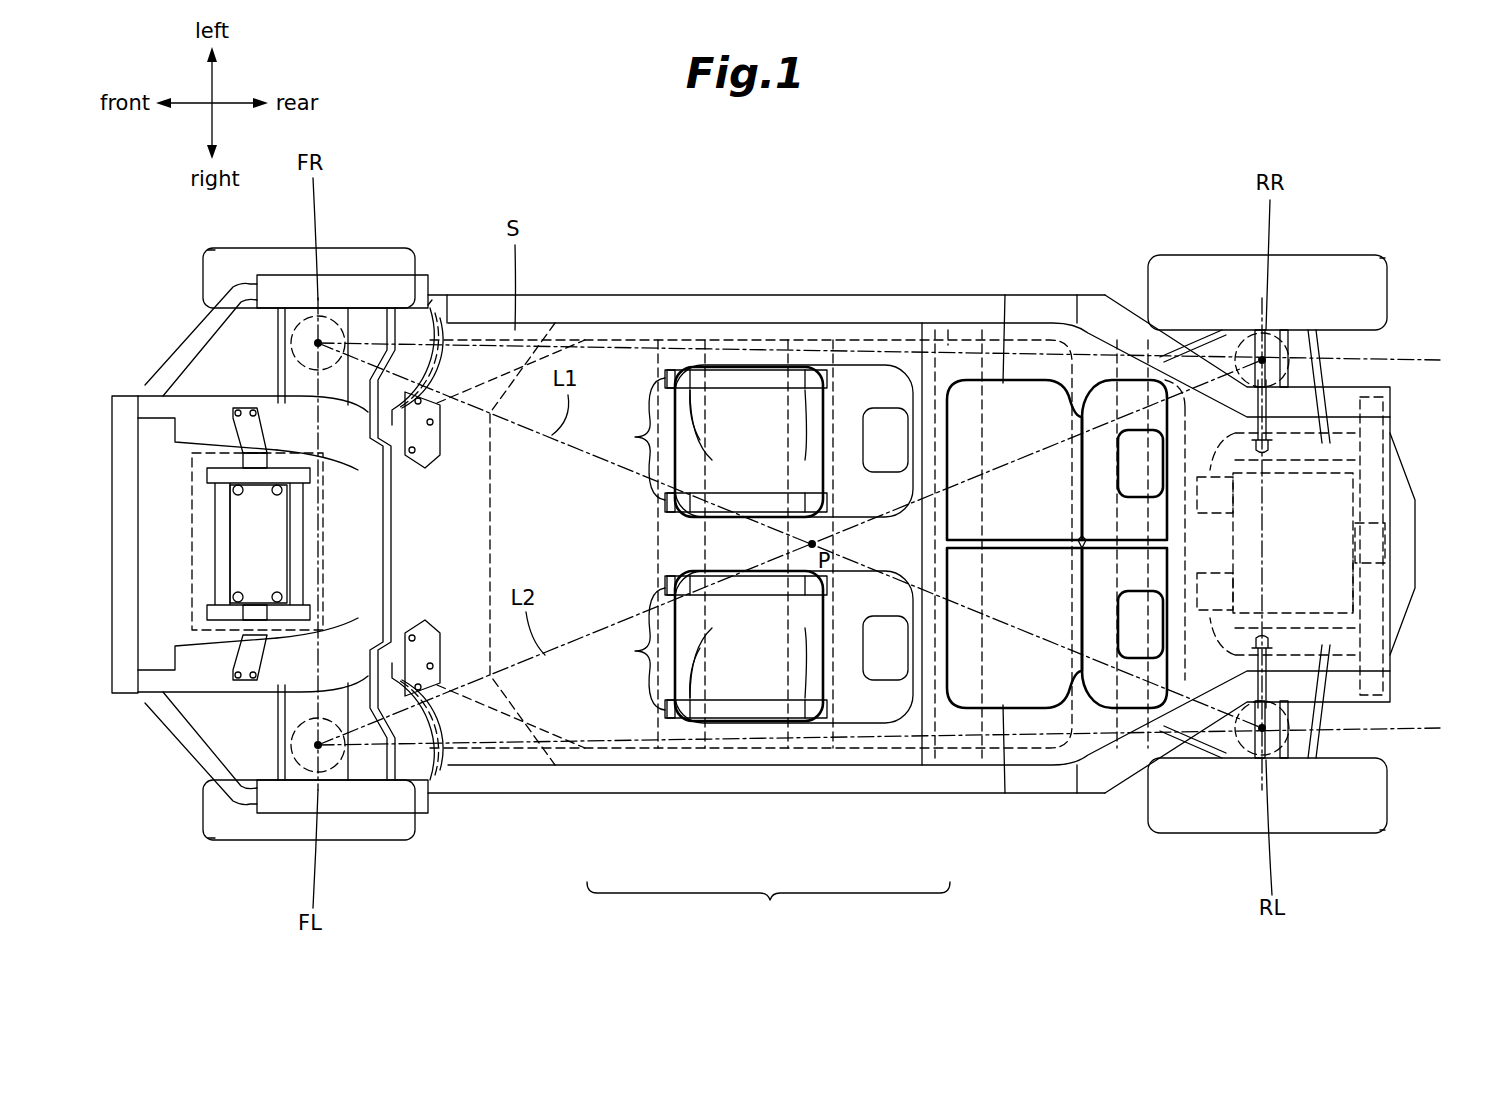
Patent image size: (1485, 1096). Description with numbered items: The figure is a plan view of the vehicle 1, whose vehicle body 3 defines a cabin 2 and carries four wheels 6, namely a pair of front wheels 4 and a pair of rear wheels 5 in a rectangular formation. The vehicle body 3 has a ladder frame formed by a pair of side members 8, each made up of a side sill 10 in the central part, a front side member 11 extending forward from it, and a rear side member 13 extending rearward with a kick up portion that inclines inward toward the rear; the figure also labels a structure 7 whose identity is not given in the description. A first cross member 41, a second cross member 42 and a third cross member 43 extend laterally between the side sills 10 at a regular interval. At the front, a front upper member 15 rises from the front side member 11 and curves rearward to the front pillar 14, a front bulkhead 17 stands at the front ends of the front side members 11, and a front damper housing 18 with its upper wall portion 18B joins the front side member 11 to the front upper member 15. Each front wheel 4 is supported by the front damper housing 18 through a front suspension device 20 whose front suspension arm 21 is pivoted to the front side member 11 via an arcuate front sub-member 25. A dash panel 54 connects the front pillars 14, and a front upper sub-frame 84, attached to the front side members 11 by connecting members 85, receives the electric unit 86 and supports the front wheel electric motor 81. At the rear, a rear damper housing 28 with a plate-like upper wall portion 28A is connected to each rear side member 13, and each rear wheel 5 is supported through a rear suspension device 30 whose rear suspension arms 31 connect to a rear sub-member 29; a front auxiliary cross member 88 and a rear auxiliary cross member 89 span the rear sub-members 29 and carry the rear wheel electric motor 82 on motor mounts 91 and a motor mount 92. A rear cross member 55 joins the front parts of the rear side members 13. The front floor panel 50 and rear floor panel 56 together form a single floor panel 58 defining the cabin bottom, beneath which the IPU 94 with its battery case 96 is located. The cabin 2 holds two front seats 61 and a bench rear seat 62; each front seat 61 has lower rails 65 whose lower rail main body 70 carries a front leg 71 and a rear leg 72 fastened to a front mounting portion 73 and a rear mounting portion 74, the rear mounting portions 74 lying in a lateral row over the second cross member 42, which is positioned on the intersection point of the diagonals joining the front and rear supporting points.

The vehicle 1 is at (1108, 134).
The cabin 2 is at (536, 527).
The vehicle body 3 is at (482, 256).
The front wheel 4 is at (233, 250).
The rear wheel 5 is at (1340, 255).
The wheel 6 is at (214, 250).
The cabin 7 is at (776, 250).
The side member 8 is at (640, 295).
The side sill 10 is at (862, 295).
The front side member 11 is at (165, 363).
The rear side member 13 is at (1390, 400).
The front pillar 14 is at (441, 300).
The front upper member 15 is at (222, 300).
The front bulkhead 17 is at (122, 396).
The front damper housing 18 is at (345, 300).
The upper wall portion 18B is at (283, 300).
The front suspension device 20 is at (291, 342).
The front suspension arm 21 is at (378, 300).
The front sub-member 25 is at (358, 470).
The rear damper housing 28 is at (1246, 330).
The upper wall portion 28A is at (1286, 330).
The rear sub-member 29 is at (1350, 447).
The rear suspension device 30 is at (1196, 330).
The rear suspension arm 31 is at (1165, 340).
The first cross member 41 is at (678, 330).
The second cross member 42 is at (800, 330).
The third cross member 43 is at (950, 330).
The front floor panel 50 is at (592, 717).
The dash panel 54 is at (398, 548).
The rear cross member 55 is at (1080, 793).
The rear floor panel 56 is at (922, 793).
The floor panel 58 is at (768, 908).
The front seat 61 is at (720, 360).
The rear seat 62 is at (1005, 295).
The lower rail 65 is at (627, 544).
The lower rail main body 70 is at (740, 517).
The front leg 71 is at (665, 378).
The rear leg 72 is at (827, 379).
The front mounting portion 73 is at (700, 440).
The rear mounting portion 74 is at (806, 430).
The front wheel electric motor 81 is at (190, 542).
The rear wheel electric motor 82 is at (1353, 595).
The front upper sub-frame 84 is at (215, 505).
The connecting member 85 is at (240, 410).
The electric unit 86 is at (262, 548).
The front auxiliary cross member 88 is at (1233, 540).
The rear auxiliary cross member 89 is at (1415, 548).
The motor mount 91 is at (1200, 503).
The motor mount 92 is at (1395, 500).
The IPU 94 is at (585, 340).
The battery case 96 is at (1005, 793).